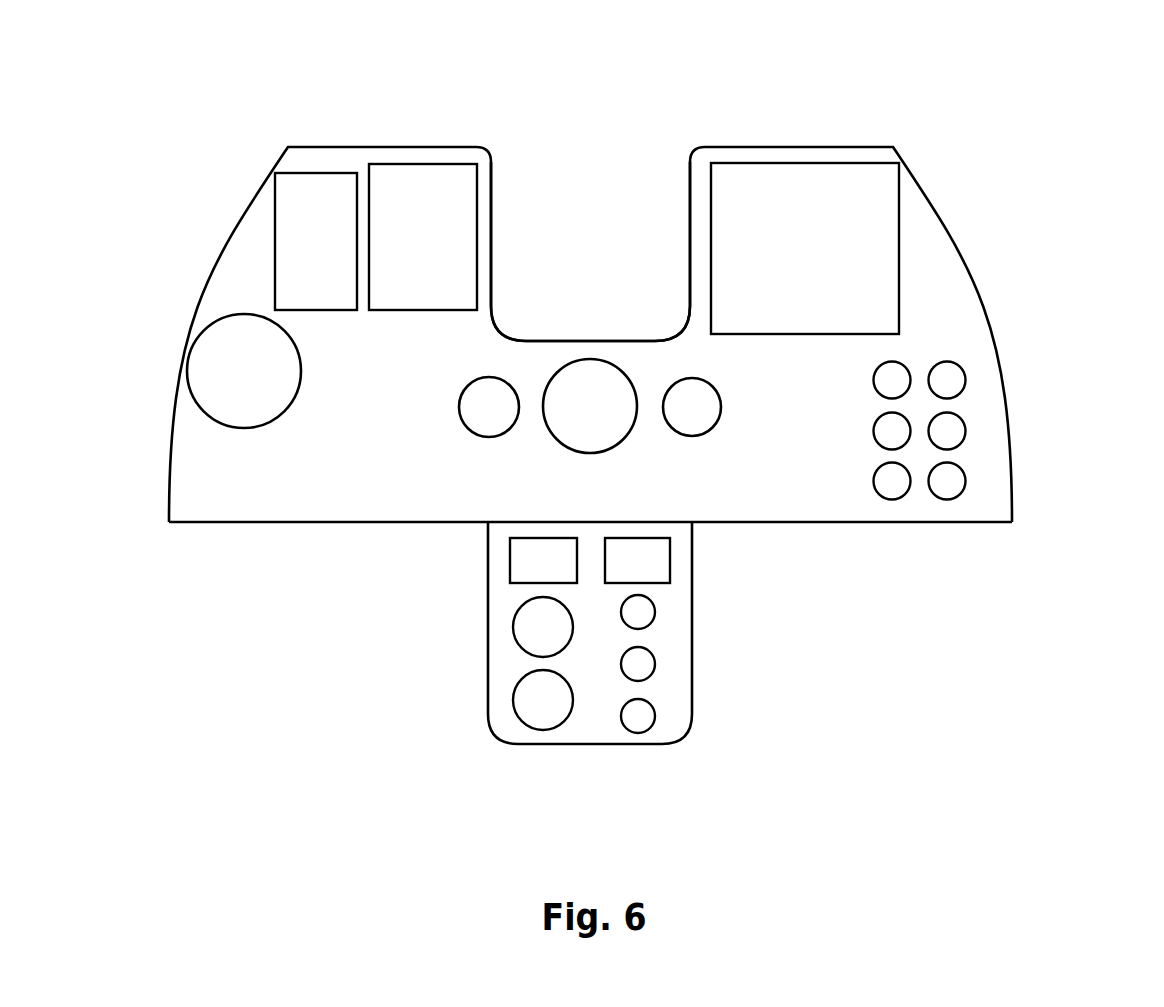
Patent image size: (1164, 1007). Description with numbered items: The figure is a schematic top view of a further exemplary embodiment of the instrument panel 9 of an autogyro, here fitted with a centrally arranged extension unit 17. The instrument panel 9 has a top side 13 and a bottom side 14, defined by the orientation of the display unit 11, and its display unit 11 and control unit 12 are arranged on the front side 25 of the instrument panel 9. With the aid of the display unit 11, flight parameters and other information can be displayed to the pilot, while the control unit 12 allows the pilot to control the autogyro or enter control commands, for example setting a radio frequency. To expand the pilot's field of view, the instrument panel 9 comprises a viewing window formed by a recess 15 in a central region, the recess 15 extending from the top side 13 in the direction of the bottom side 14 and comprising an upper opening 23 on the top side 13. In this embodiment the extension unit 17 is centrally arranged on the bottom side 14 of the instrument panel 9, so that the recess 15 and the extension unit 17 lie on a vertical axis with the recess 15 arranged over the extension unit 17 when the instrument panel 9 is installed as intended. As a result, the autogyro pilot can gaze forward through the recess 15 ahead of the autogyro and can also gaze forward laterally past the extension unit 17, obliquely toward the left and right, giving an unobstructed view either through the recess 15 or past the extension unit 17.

The instrument panel 9 is at (184, 174).
The display unit 11 is at (847, 203).
The control unit 12 is at (947, 380).
The top side 13 is at (402, 147).
The bottom side 14 is at (290, 522).
The recess 15 is at (625, 242).
The extension unit 17 is at (503, 703).
The upper opening 23 is at (592, 157).
The front side 25 is at (725, 480).